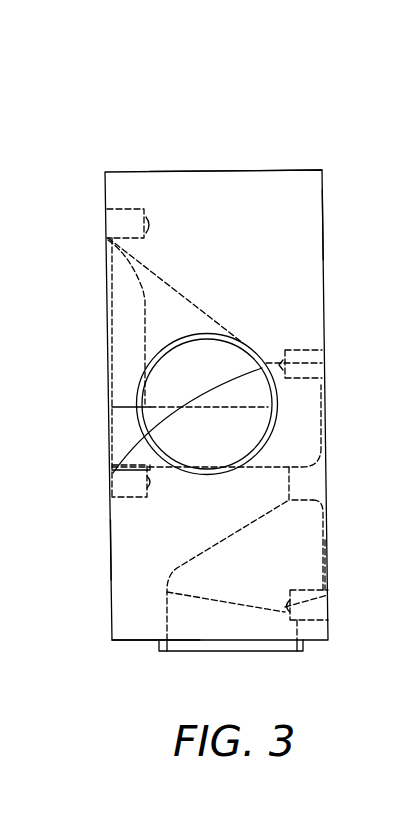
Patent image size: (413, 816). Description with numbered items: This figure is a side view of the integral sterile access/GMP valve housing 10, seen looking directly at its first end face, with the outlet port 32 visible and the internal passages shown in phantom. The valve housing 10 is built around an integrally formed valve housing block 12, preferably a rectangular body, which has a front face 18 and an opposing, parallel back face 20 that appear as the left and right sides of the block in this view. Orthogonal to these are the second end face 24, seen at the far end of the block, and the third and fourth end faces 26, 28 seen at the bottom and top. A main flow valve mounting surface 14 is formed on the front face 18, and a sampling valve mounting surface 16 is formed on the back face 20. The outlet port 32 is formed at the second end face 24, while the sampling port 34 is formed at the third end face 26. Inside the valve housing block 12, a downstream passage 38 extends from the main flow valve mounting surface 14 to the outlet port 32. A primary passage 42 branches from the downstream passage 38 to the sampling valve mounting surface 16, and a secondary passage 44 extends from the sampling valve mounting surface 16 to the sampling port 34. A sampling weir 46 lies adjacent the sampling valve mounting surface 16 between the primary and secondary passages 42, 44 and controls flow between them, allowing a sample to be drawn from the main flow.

The valve housing 10 is at (130, 105).
The valve housing block 12 is at (122, 172).
The main flow valve mounting surface 14 is at (107, 290).
The sampling valve mounting surface 16 is at (328, 560).
The front face 18 is at (112, 541).
The back face 20 is at (322, 225).
The second end face 24 is at (291, 183).
The third end face 26 is at (130, 643).
The fourth end face 28 is at (200, 170).
The outlet port 32 is at (144, 392).
The sampling port 34 is at (178, 651).
The downstream passage 38 is at (190, 440).
The primary passage 42 is at (298, 420).
The secondary passage 44 is at (293, 546).
The sampling weir 46 is at (300, 483).